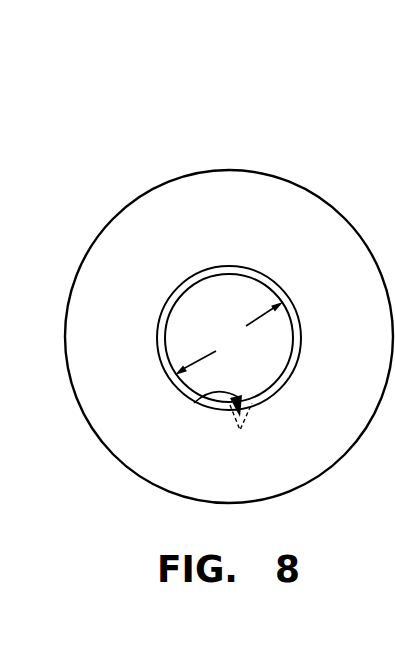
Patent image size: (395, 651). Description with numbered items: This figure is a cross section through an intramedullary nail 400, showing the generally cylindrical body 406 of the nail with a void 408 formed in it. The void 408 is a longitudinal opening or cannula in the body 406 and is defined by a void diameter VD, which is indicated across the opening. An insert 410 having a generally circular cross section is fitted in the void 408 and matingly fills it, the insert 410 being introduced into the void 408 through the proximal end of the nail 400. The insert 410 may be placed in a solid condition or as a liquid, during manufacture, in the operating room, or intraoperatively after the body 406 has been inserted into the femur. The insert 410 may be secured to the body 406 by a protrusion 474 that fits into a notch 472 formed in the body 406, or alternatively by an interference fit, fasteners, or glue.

The intramedullary nail 400 is at (233, 105).
The body 406 is at (62, 430).
The void 408 is at (165, 313).
The insert 410 is at (265, 295).
The notch 472 is at (193, 400).
The protrusion 474 is at (253, 398).